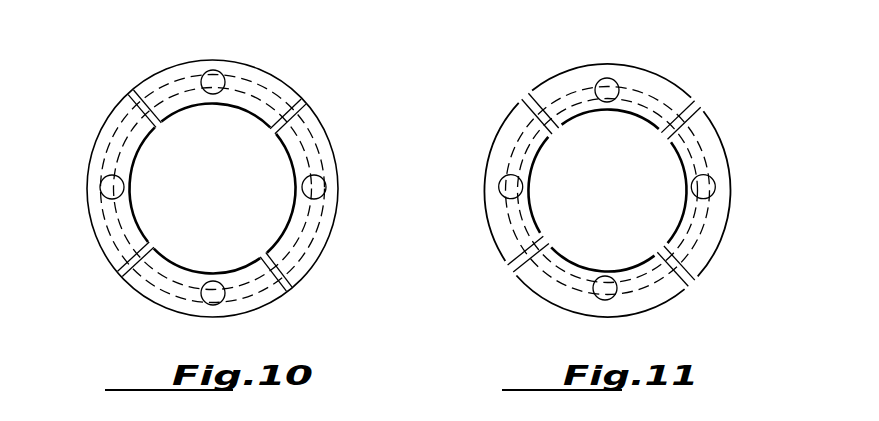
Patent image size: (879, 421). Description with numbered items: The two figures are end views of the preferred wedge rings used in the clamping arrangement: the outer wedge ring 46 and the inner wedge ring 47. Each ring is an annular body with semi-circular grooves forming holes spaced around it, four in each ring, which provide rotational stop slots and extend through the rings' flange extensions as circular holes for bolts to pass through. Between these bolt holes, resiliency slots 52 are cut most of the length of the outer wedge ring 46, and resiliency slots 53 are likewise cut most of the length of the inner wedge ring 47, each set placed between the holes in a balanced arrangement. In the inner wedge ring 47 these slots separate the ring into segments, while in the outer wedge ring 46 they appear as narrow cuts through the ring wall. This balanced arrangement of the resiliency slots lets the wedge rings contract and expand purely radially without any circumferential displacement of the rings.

In FIG. 10, the outer wedge ring 46 is at (318, 253).
In FIG. 10, the resiliency slots 52 is at (157, 127).
In FIG. 11, the inner wedge ring 47 is at (555, 305).
In FIG. 11, the resiliency slots 53 is at (670, 128).